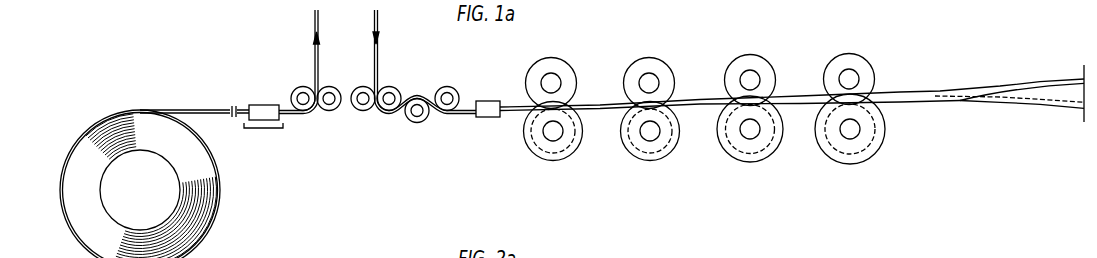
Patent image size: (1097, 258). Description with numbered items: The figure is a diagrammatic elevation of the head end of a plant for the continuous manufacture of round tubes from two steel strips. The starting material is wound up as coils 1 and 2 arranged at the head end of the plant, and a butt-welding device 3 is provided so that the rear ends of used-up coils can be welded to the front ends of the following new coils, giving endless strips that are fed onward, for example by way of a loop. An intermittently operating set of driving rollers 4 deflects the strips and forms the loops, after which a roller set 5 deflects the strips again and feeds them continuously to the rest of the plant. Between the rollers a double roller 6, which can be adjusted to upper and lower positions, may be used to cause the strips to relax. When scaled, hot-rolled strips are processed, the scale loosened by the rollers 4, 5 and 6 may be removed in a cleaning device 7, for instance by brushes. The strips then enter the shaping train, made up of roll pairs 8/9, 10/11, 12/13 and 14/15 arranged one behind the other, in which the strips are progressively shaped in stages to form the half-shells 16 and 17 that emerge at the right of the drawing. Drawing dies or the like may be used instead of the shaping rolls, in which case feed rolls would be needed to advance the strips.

The coil 1 is at (131, 184).
The coil 2 is at (80, 142).
The butt-welding device 3 is at (262, 108).
The set of driving rollers 4 is at (313, 108).
The roller set 5 is at (366, 106).
The double roller 6 is at (417, 117).
The cleaning device 7 is at (487, 117).
The roll 8 is at (531, 151).
The roll 9 is at (535, 70).
The roll 10 is at (629, 151).
The roll 11 is at (633, 71).
The roll 12 is at (725, 153).
The roll 13 is at (732, 67).
The roll 14 is at (828, 153).
The roll 15 is at (832, 67).
The half-shell 16 is at (1009, 93).
The half-shell 17 is at (1013, 92).